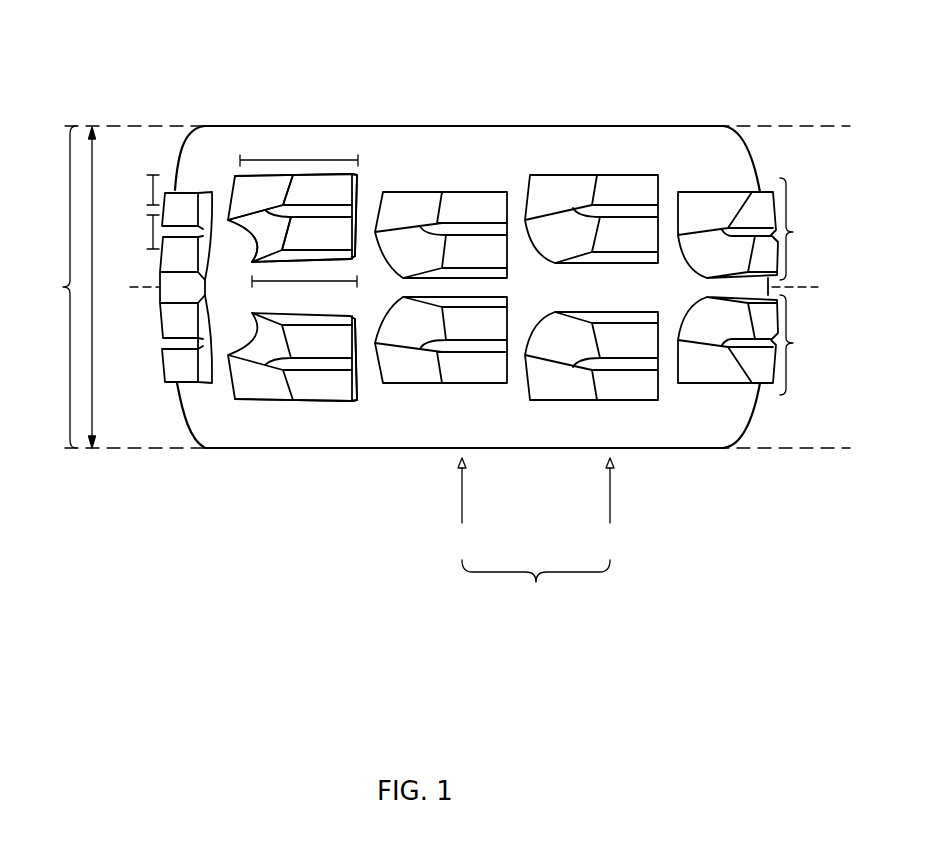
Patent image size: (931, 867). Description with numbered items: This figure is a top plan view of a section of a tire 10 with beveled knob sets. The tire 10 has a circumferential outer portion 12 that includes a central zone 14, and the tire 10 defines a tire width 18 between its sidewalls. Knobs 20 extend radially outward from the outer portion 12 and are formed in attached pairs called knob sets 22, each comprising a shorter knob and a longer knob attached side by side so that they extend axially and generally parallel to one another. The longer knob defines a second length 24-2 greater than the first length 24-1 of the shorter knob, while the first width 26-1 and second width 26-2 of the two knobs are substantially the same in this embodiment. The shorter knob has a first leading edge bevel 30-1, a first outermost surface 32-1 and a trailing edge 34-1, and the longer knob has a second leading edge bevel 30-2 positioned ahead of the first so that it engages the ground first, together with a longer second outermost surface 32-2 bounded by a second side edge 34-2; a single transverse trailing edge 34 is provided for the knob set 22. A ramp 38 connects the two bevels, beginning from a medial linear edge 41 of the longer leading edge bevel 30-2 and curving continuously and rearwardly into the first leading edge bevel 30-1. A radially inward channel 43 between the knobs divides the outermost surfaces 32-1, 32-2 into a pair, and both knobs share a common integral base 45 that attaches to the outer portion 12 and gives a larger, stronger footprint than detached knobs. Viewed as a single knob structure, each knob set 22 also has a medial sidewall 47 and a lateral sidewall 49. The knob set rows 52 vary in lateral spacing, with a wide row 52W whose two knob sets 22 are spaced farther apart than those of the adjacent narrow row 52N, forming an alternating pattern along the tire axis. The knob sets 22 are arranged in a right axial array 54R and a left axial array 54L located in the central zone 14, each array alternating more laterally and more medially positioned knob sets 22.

The tire 10 is at (121, 70).
The circumferential outer portion 12 is at (207, 428).
The central zone 14 is at (58, 287).
The tire width 18 is at (91, 287).
The knobs 20 is at (722, 335).
The knob set 22 is at (233, 190).
The first length 24-1 is at (303, 283).
The second length 24-2 is at (302, 147).
The first width 26-1 is at (150, 231).
The second width 26-2 is at (150, 188).
The first leading edge bevel 30-1 is at (270, 247).
The second leading edge bevel 30-2 is at (250, 187).
The first outermost surface 32-1 is at (377, 233).
The second outermost surface 32-2 is at (362, 175).
The transverse trailing edge 34 is at (356, 387).
The trailing edge 34-1 is at (355, 247).
The second side edge 34-2 is at (362, 195).
The ramp 38 is at (270, 243).
The medial linear edge 41 is at (259, 227).
The channel 43 is at (306, 208).
The common base 45 is at (331, 253).
The medial sidewall 47 is at (318, 322).
The lateral sidewall 49 is at (323, 402).
The knob set rows 52 is at (536, 585).
The narrow row 52N is at (461, 504).
The wide row 52W is at (613, 504).
The right axial array 54R is at (760, 229).
The left axial array 54L is at (759, 345).